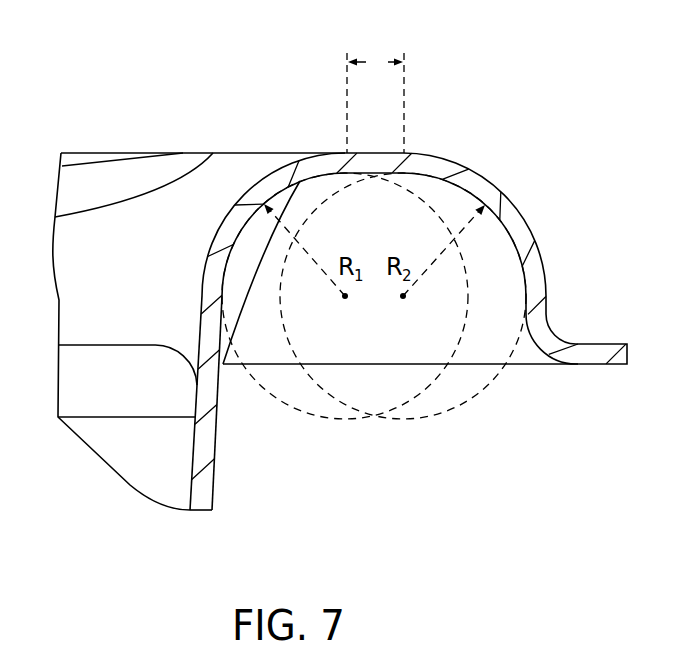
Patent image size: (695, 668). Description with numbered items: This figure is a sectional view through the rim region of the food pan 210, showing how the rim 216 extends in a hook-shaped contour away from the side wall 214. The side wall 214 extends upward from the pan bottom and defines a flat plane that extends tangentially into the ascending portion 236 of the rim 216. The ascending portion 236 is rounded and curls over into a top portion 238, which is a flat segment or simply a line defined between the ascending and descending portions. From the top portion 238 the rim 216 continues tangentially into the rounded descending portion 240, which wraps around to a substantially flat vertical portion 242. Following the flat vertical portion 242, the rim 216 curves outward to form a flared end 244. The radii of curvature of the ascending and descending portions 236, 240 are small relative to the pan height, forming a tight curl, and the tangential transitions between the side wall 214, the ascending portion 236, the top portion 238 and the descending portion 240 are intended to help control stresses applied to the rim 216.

The food pan 210 is at (44, 79).
The side wall 214 is at (207, 445).
The rim 216 is at (431, 238).
The ascending portion 236 is at (252, 195).
The top portion 238 is at (372, 160).
The descending portion 240 is at (508, 206).
The flat vertical portion 242 is at (547, 322).
The flared end 244 is at (585, 358).